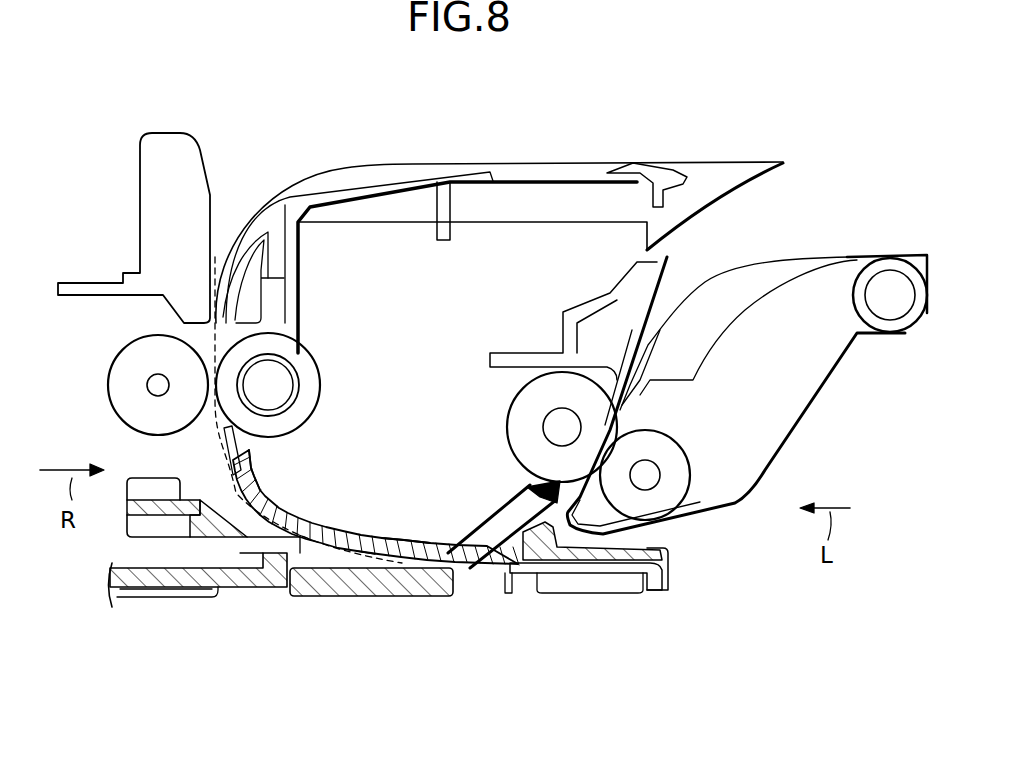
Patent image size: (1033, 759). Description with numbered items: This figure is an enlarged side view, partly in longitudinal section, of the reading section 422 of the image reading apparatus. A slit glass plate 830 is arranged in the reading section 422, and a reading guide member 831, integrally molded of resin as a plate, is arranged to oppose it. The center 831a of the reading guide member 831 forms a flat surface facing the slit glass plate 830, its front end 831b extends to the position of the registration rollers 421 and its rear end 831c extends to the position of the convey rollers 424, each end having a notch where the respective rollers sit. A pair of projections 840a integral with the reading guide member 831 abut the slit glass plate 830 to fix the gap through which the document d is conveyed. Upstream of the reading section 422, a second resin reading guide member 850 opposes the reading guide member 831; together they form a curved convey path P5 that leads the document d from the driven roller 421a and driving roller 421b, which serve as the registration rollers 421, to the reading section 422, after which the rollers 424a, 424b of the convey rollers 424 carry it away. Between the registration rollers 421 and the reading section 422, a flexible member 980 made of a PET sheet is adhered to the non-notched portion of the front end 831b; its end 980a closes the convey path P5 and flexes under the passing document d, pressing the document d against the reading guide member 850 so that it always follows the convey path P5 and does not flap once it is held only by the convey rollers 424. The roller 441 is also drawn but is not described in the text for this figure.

The registration rollers 421 is at (207, 372).
The driven roller 421a is at (133, 350).
The driving roller 421b is at (343, 353).
The reading section 422 is at (389, 601).
The convey rollers 424 is at (667, 400).
The roller 424a is at (528, 412).
The roller 424b is at (667, 450).
The roller 441 is at (889, 246).
The slit glass plate 830 is at (377, 596).
The reading guide member 831 is at (396, 506).
The center 831a is at (421, 545).
The front end 831b is at (256, 459).
The rear end 831c is at (533, 483).
The projections 840a is at (438, 596).
The reading guide member 850 is at (235, 515).
The flexible member 980 is at (252, 441).
The end 980a is at (217, 477).
The convey path P5 is at (307, 513).
The document d is at (362, 540).